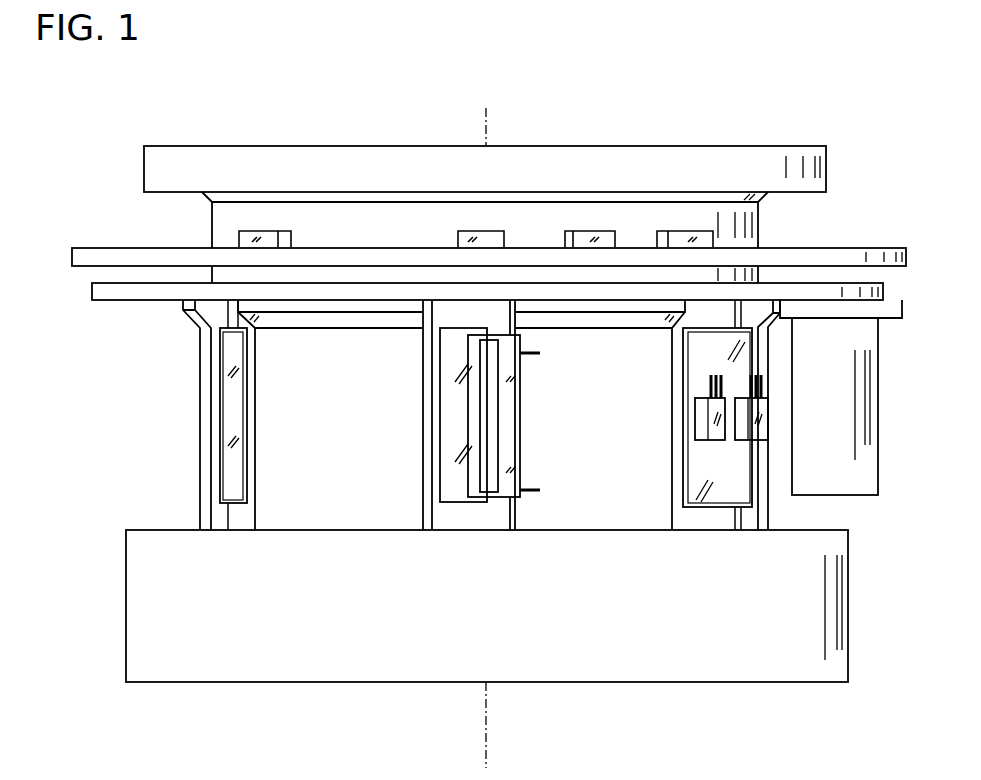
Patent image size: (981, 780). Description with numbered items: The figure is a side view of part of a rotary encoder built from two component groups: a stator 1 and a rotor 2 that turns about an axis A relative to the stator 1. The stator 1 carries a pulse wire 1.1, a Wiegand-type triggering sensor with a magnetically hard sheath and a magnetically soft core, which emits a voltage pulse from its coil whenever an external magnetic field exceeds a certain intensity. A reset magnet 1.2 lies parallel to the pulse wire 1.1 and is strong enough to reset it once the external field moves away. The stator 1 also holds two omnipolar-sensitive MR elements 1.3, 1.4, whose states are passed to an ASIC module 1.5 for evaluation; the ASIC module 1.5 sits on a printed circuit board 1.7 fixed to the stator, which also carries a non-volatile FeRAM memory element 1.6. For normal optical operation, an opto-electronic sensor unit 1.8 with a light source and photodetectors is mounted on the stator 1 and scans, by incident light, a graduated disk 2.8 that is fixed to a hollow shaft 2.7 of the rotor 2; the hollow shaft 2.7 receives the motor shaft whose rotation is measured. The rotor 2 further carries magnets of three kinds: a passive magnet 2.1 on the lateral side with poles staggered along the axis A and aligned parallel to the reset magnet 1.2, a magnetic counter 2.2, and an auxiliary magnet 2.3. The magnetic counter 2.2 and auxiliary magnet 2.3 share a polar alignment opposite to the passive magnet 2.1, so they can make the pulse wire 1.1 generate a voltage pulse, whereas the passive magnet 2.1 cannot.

The stator 1 is at (169, 582).
The pulse wire 1.1 is at (523, 416).
The reset magnet 1.2 is at (490, 452).
The MR element 1.3 is at (742, 420).
The MR element 1.4 is at (700, 413).
The ASIC module 1.5 is at (568, 234).
The FeRAM memory element 1.6 is at (669, 235).
The printed circuit board 1.7 is at (118, 254).
The opto-electronic sensor unit 1.8 is at (873, 486).
The rotor 2 is at (177, 426).
The passive magnet 2.1 is at (250, 488).
The magnetic counter 2.2 is at (445, 471).
The auxiliary magnet 2.3 is at (690, 470).
The hollow shaft 2.7 is at (357, 403).
The graduated disk 2.8 is at (108, 292).
The axis A is at (484, 718).